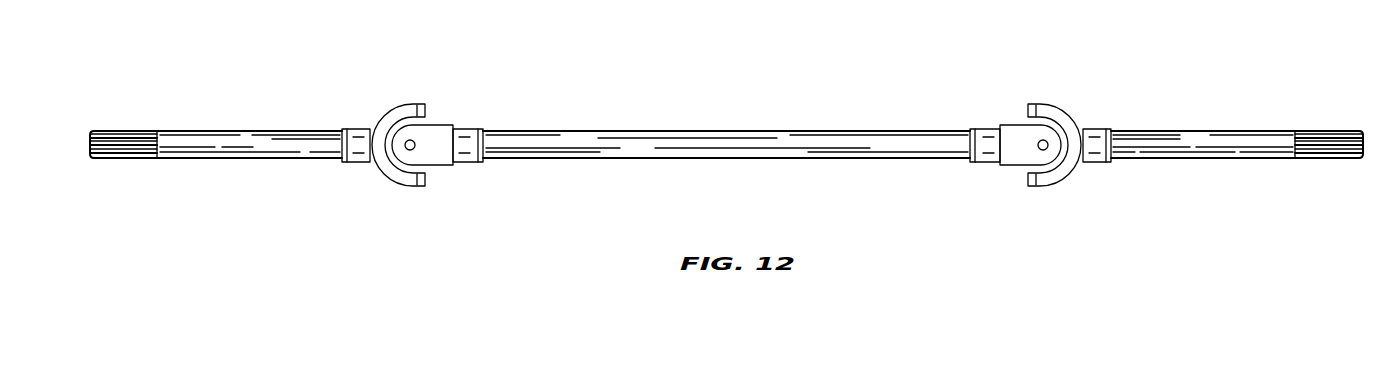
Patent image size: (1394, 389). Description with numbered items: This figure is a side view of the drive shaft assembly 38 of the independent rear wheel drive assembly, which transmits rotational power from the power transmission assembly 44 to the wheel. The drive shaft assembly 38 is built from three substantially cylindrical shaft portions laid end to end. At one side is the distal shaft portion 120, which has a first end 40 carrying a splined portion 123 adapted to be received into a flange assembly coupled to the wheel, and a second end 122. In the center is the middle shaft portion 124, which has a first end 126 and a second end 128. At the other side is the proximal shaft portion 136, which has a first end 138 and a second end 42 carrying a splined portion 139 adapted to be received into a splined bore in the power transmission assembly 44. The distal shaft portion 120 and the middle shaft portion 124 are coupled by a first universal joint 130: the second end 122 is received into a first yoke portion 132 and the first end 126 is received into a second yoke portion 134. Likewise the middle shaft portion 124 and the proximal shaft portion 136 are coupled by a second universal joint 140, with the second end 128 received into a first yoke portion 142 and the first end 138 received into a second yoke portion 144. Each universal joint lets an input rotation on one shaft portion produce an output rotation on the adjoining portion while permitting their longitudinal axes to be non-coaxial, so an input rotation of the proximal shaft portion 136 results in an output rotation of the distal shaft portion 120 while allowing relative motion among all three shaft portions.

The drive shaft assembly 38 is at (347, 46).
The first end 40 is at (208, 138).
The second end 42 is at (1249, 139).
The power transmission assembly 44 is at (1352, 212).
The distal shaft portion 120 is at (230, 157).
The second end 122 is at (318, 125).
The splined portion 123 is at (130, 161).
The middle shaft portion 124 is at (618, 145).
The first end 126 is at (504, 126).
The second end 128 is at (940, 121).
The first universal joint 130 is at (412, 135).
The first yoke portion 132 is at (392, 183).
The second yoke portion 134 is at (440, 161).
The proximal shaft portion 136 is at (1208, 159).
The first end 138 is at (1141, 126).
The splined portion 139 is at (1318, 156).
The second universal joint 140 is at (1041, 135).
The first yoke portion 142 is at (990, 161).
The second yoke portion 144 is at (1056, 181).